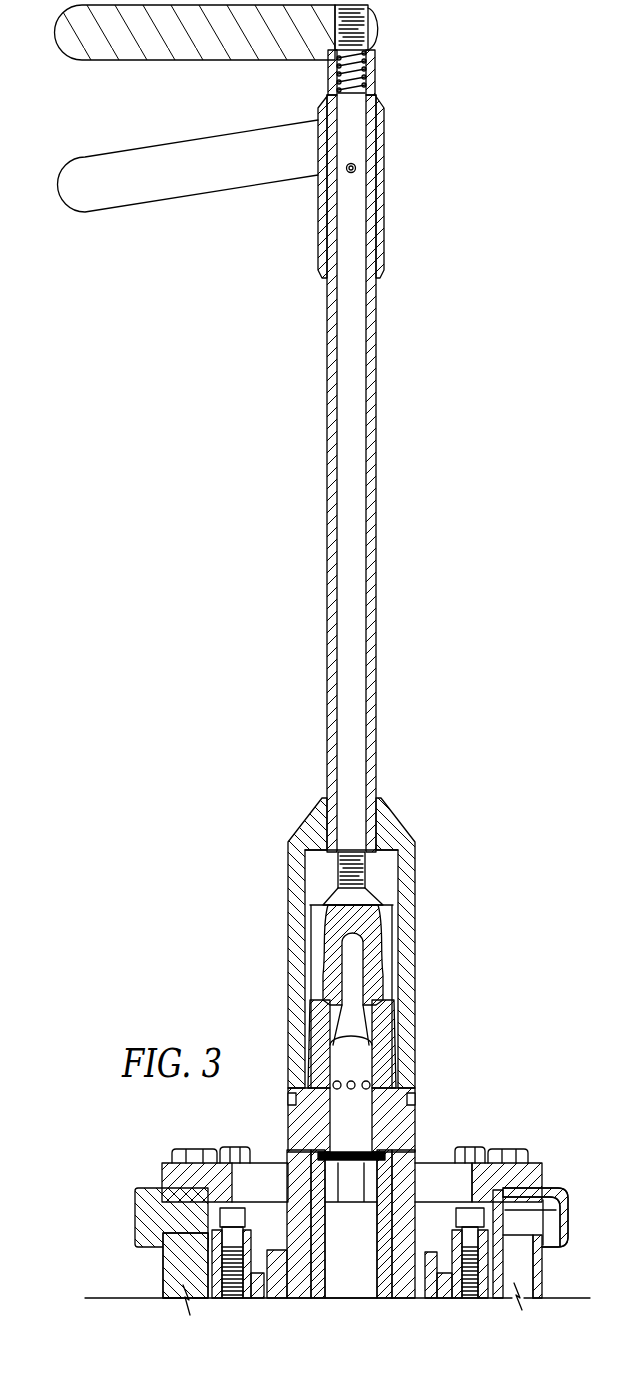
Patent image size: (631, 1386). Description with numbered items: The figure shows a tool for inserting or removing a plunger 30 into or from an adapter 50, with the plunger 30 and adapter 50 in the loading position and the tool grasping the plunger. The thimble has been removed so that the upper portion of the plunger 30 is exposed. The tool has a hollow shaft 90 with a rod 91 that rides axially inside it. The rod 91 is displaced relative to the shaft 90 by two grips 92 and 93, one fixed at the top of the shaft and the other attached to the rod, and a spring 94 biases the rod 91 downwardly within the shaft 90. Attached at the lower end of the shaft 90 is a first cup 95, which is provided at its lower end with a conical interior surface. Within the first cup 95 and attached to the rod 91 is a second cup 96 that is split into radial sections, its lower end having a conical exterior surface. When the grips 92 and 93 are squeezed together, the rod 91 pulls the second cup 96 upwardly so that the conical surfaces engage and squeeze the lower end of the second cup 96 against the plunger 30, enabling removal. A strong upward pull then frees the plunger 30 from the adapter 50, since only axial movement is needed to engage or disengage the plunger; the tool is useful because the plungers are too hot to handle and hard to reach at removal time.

The plunger 30 is at (370, 927).
The adapter 50 is at (424, 1173).
The hollow shaft 90 is at (372, 492).
The rod 91 is at (355, 398).
The grip 92 is at (192, 178).
The grip 93 is at (142, 60).
The spring 94 is at (376, 70).
The first cup 95 is at (295, 912).
The second cup 96 is at (383, 947).